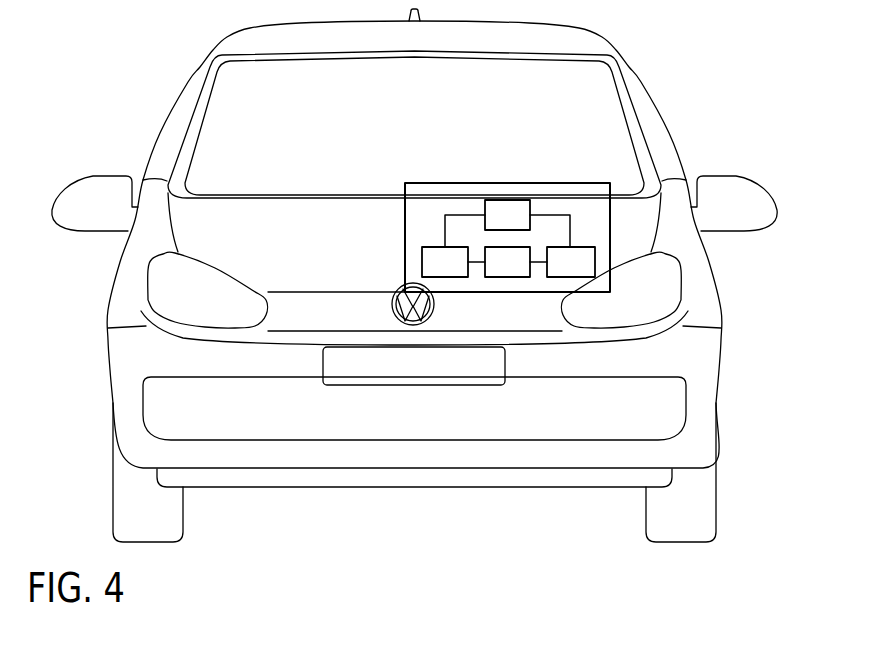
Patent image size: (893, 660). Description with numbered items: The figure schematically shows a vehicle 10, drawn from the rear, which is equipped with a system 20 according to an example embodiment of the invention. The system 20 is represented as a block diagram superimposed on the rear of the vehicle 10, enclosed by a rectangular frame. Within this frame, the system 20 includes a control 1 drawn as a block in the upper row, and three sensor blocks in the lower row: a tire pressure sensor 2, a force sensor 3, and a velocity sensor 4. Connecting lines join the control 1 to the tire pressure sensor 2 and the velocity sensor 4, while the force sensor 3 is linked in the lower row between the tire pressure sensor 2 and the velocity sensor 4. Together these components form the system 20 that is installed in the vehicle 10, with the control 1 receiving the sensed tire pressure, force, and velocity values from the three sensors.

The vehicle 10 is at (655, 120).
The system 20 is at (601, 237).
The control 1 is at (507, 215).
The tire pressure sensor 2 is at (445, 262).
The force sensor 3 is at (507, 262).
The velocity sensor 4 is at (571, 262).